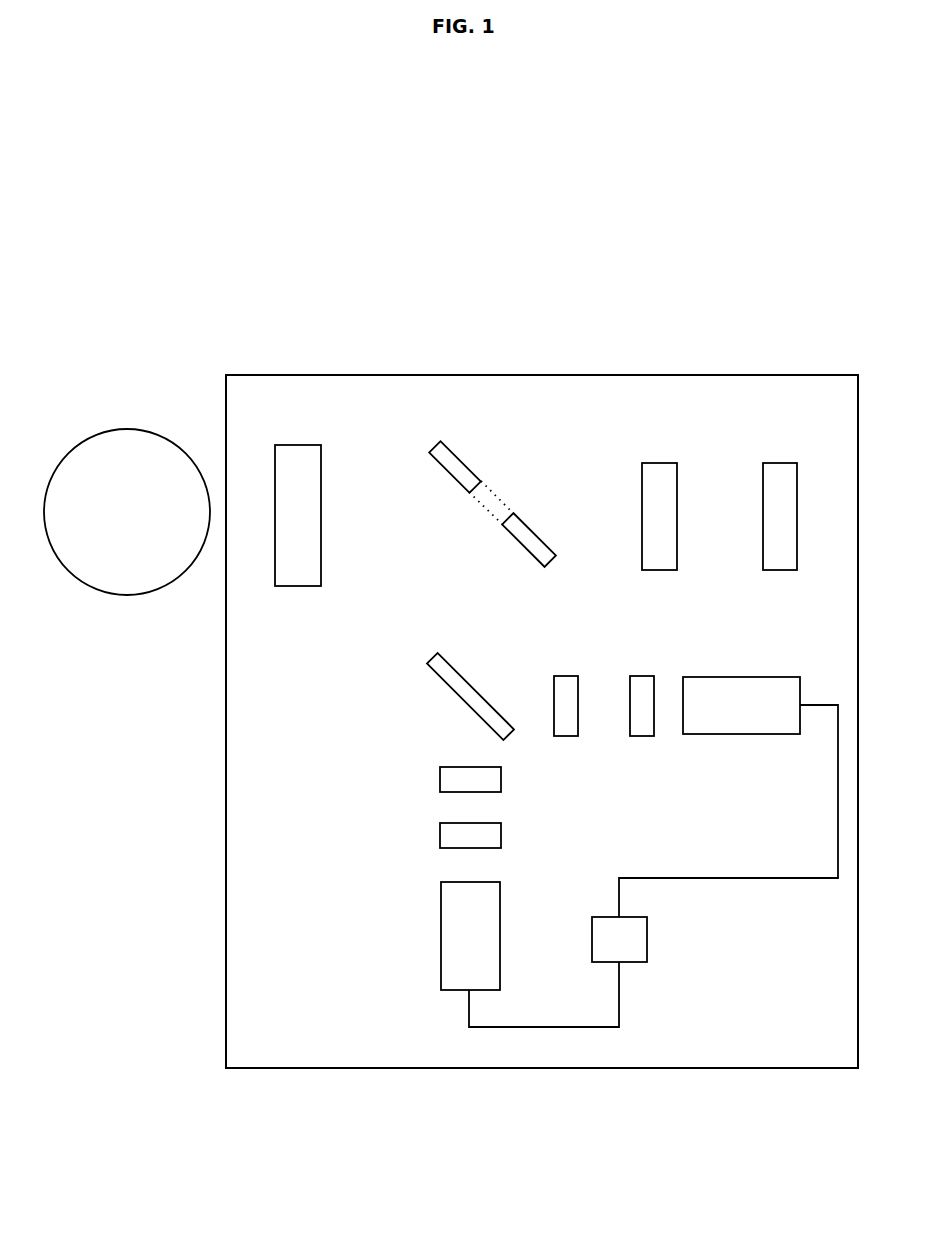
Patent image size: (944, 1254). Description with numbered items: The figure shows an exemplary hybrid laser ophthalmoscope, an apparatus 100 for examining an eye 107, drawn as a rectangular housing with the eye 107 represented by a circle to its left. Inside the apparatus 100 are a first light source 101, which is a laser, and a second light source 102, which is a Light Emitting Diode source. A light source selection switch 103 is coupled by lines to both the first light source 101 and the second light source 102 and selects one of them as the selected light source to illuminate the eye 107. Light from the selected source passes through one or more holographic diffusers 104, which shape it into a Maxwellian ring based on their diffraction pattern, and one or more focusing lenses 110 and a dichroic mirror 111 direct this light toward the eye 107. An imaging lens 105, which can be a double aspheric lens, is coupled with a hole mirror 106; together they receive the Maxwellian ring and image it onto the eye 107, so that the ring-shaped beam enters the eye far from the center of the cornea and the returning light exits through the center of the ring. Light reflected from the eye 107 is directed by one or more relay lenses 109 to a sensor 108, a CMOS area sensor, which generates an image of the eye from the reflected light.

The apparatus 100 is at (543, 375).
The first light source 101 is at (763, 677).
The second light source 102 is at (441, 938).
The light source selection switch 103 is at (626, 917).
The holographic diffuser 104 is at (641, 676).
The imaging lens 105 is at (296, 445).
The hole mirror 106 is at (462, 457).
The eye 107 is at (127, 429).
The sensor 108 is at (781, 463).
The relay lens 109 is at (661, 463).
The focusing lens 110 is at (566, 676).
The dichroic mirror 111 is at (476, 688).